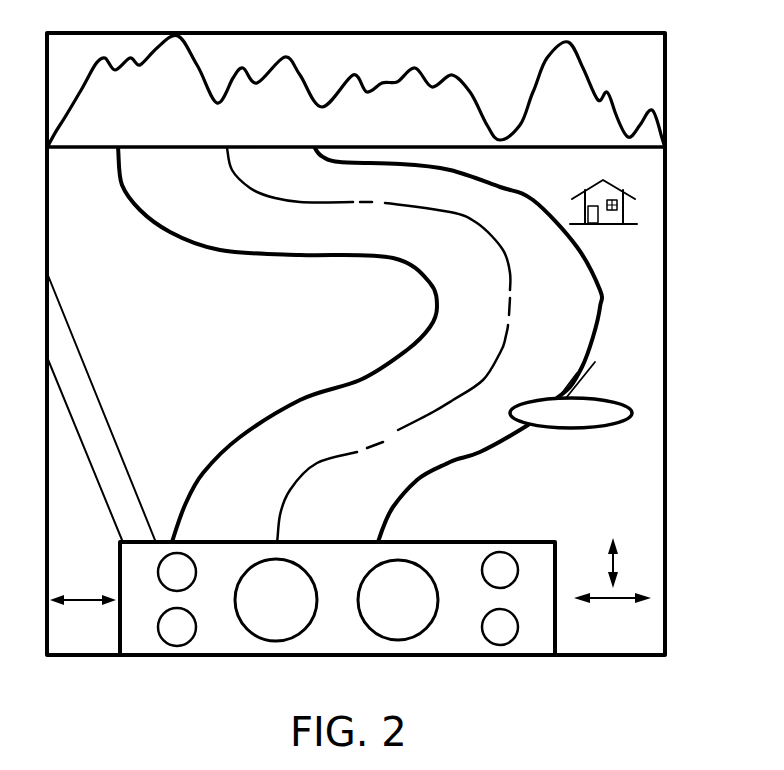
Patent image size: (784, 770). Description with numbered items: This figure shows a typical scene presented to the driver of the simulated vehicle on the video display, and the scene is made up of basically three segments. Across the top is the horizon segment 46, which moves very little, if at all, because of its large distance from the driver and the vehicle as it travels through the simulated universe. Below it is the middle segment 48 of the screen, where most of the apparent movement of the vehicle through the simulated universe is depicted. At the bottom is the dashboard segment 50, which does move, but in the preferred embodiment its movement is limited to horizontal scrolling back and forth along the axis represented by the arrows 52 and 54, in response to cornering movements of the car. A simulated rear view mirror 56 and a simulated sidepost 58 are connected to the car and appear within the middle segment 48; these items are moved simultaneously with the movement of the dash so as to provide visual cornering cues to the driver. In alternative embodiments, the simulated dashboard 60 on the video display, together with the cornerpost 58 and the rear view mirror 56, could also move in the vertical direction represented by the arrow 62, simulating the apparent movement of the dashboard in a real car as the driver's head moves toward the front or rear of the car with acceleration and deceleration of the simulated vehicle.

The horizon segment 46 is at (647, 63).
The middle segment 48 is at (675, 150).
The dashboard segment 50 is at (675, 539).
The arrow 52 is at (90, 600).
The arrow 54 is at (600, 598).
The simulated rear view mirror 56 is at (548, 428).
The simulated sidepost 58 is at (98, 400).
The simulated dashboard 60 is at (475, 542).
The arrow 62 is at (614, 553).